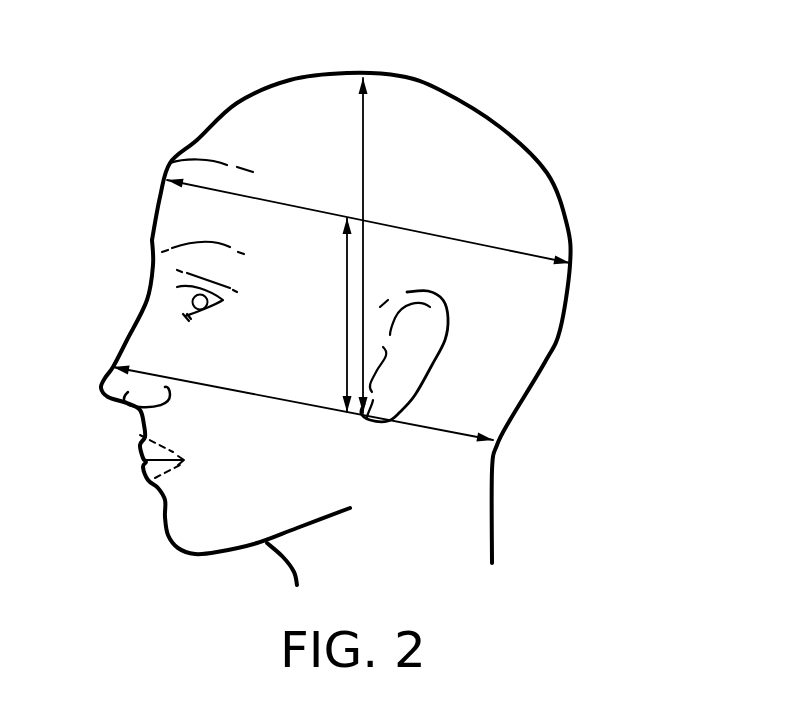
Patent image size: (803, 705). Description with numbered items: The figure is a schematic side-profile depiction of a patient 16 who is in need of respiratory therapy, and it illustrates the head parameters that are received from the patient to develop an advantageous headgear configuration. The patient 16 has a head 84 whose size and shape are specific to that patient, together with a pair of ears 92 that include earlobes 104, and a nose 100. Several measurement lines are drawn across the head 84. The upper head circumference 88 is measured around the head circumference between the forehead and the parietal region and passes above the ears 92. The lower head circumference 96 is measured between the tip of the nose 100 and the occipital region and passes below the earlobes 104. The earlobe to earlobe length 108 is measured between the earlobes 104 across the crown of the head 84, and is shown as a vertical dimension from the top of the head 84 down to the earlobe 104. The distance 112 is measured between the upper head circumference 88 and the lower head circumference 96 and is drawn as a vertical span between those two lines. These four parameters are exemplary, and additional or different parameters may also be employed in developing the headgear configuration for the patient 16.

The patient 16 is at (365, 310).
The head 84 is at (498, 121).
The upper head circumference (UHC) 88 is at (292, 205).
The ears 92 is at (444, 313).
The lower head circumference (LHC) 96 is at (219, 385).
The nose 100 is at (125, 352).
The earlobes 104 is at (406, 405).
The earlobe to earlobe length (E2E) 108 is at (365, 173).
The distance (D) 112 is at (347, 345).